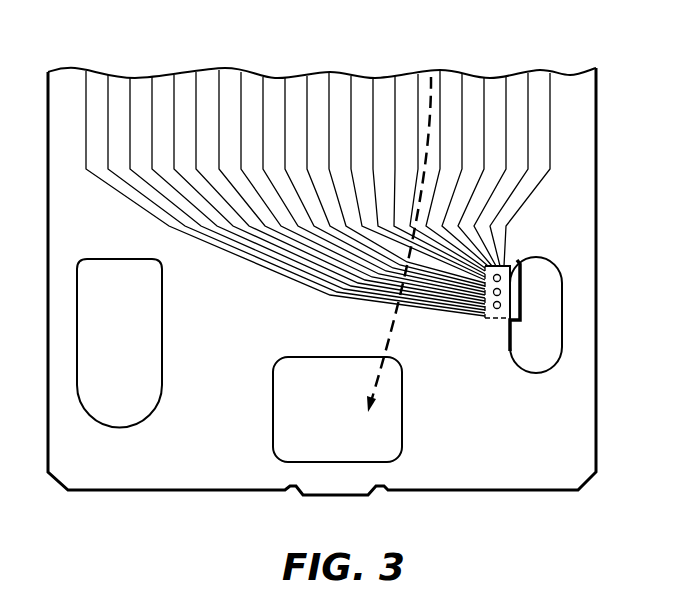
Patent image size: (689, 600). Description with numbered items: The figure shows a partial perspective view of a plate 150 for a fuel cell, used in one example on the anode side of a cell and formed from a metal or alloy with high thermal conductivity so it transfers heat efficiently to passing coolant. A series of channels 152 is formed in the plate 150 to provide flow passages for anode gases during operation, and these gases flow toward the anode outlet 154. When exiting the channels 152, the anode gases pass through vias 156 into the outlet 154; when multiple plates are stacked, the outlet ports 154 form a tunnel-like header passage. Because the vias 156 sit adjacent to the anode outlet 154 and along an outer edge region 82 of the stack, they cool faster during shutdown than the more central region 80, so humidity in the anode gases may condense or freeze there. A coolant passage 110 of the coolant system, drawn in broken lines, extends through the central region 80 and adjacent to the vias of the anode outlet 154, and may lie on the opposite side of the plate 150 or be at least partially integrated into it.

The central region 80 is at (300, 66).
The outer edge region 82 is at (510, 262).
The coolant passage 110 is at (433, 105).
The plate 150 is at (188, 491).
The channels 152 is at (153, 138).
The anode outlet 154 is at (562, 295).
The vias 156 is at (497, 309).